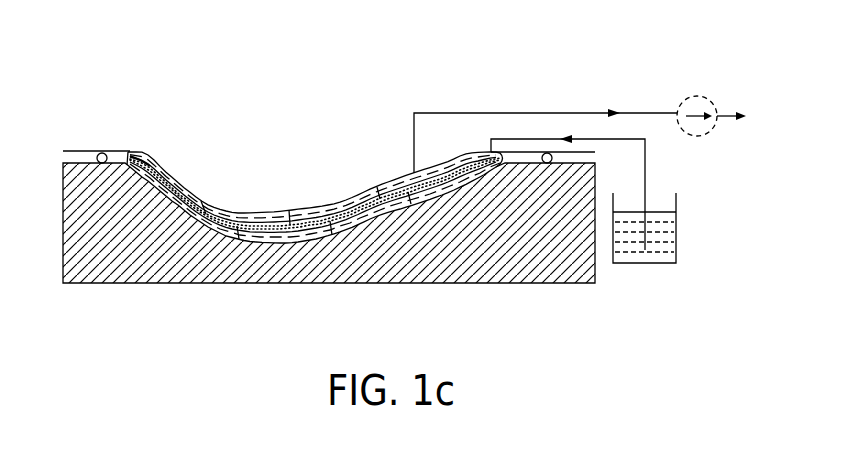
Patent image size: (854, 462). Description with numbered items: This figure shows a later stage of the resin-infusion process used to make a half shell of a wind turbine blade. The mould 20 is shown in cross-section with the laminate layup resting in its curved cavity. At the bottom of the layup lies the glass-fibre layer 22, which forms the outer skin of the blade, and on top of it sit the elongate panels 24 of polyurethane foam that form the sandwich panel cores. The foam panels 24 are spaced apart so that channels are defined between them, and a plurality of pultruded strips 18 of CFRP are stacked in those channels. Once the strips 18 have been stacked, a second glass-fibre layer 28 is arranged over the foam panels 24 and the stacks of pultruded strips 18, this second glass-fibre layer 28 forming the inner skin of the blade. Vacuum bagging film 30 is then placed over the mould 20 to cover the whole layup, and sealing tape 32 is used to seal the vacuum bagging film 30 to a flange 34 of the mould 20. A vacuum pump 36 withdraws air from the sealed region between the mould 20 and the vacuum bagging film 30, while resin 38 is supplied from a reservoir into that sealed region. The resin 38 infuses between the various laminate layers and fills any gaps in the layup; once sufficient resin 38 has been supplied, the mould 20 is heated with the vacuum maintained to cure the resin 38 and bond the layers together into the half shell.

The pultruded strips 18 is at (235, 223).
The mould 20 is at (102, 285).
The glass-fibre layer 22 is at (135, 162).
The elongate panels of polyurethane foam 24 is at (200, 207).
The second glass-fibre layer 28 is at (332, 212).
The vacuum bagging film 30 is at (178, 183).
The sealing tape 32 is at (105, 154).
The flange 34 is at (75, 162).
The vacuum pump 36 is at (697, 96).
The resin 38 is at (676, 230).